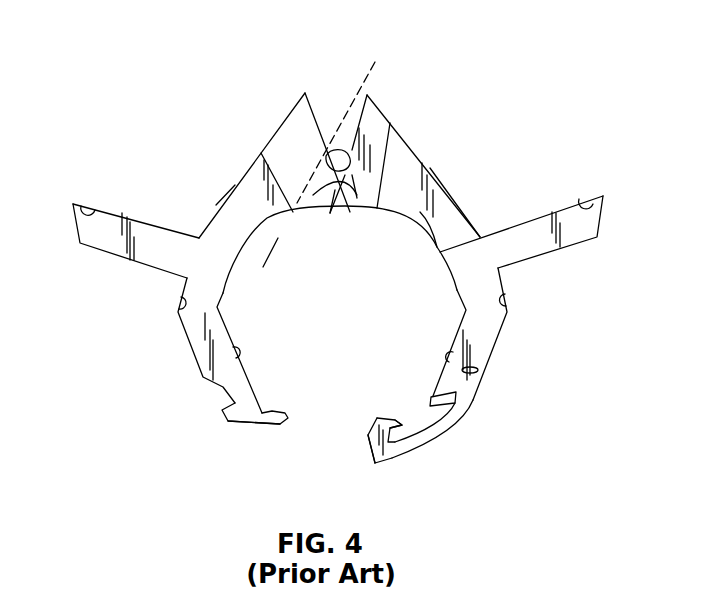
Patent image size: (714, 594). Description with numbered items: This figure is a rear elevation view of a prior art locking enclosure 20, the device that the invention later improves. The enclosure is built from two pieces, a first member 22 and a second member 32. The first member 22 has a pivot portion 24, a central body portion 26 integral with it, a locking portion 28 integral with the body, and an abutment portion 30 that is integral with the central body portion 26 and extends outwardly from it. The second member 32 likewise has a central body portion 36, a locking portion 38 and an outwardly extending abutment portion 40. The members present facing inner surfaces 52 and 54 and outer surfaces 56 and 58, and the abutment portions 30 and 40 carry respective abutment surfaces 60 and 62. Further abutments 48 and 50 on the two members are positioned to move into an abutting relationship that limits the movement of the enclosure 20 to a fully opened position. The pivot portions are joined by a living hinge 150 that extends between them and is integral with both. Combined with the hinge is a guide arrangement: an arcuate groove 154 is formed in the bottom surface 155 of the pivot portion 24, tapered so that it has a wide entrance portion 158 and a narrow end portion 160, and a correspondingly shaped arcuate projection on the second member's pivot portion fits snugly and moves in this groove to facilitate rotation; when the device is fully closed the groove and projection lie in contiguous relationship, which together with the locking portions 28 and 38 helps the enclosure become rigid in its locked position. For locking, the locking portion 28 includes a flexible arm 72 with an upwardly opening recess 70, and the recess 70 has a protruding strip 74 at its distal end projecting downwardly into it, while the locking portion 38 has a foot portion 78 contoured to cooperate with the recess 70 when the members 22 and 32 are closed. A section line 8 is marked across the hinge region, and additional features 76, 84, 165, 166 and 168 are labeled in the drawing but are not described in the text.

The section line 8- 8 is at (402, 72).
The locking enclosure 20 is at (178, 127).
The first member 22 is at (451, 172).
The pivot portion 24 is at (365, 207).
The central body portion 26 is at (460, 296).
The locking portion 28 is at (453, 422).
The abutment portion 30 is at (545, 248).
The second member 32 is at (222, 187).
The central body portion 36 is at (208, 290).
The locking portion 38 is at (198, 348).
The abutment portion 40 is at (104, 248).
The abutment 48 is at (378, 108).
The abutment 50 is at (300, 108).
The inner surface 52 is at (452, 356).
The inner surface 54 is at (237, 353).
The outer surface 56 is at (504, 301).
The outer surface 58 is at (178, 305).
The abutment surface 60 is at (587, 198).
The abutment surface 62 is at (88, 201).
The recess 70 is at (417, 420).
The flexible arm 72 is at (392, 458).
The protruding strip 74 is at (434, 392).
The lip 76 is at (376, 422).
The foot portion 78 is at (274, 410).
The foot bottom 84 is at (237, 422).
The living hinge 150 is at (341, 160).
The arcuate groove 154 is at (320, 200).
The bottom surface 155 is at (347, 192).
The wide entrance portion 158 is at (259, 152).
The narrow end portion 160 is at (357, 199).
The side face of tab 48 165 is at (444, 196).
The inner face of tab 48 166 is at (388, 150).
The outer surface of arch 168 is at (433, 250).